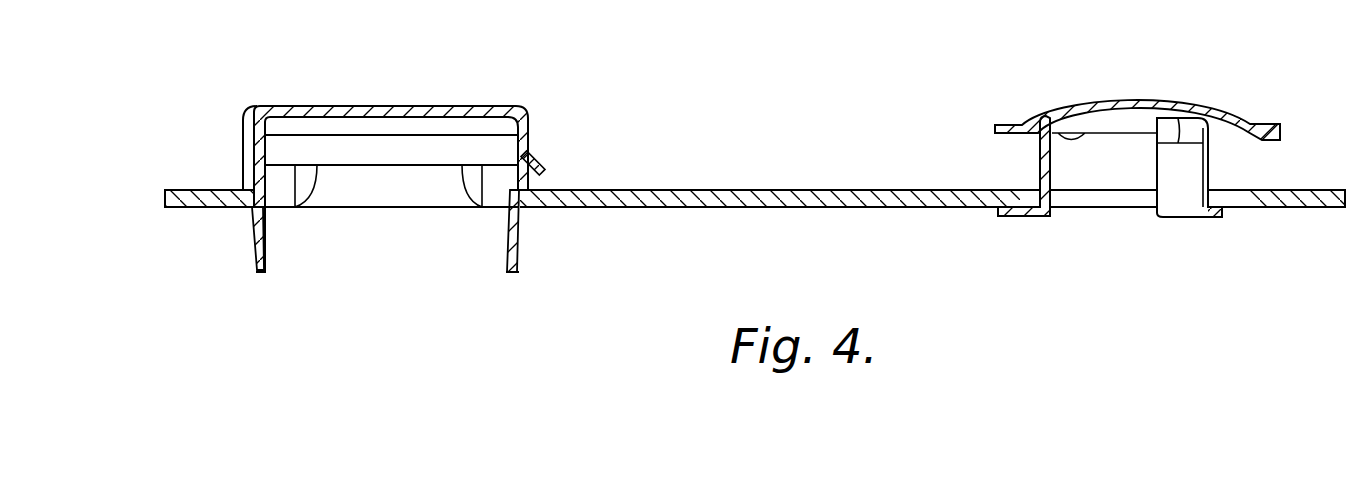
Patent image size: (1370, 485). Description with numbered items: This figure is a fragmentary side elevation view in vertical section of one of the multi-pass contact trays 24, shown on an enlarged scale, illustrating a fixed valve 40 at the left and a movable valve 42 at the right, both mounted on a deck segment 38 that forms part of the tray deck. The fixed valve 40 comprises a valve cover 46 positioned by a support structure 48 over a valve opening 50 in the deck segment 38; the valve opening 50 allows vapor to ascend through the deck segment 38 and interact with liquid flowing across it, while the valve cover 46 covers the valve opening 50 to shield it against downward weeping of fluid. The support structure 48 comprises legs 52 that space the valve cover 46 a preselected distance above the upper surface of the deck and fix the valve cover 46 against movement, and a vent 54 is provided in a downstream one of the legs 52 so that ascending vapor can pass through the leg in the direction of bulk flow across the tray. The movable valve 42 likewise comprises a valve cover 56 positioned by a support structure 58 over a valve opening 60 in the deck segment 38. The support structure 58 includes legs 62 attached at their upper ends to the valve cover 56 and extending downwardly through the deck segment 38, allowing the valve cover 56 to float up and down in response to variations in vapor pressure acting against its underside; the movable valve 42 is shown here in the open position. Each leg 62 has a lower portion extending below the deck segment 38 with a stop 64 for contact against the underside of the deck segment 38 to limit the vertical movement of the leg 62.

The multi-pass contact tray 24 is at (809, 191).
The deck segment 38 is at (690, 190).
The fixed valve 40 is at (483, 104).
The movable valve 42 is at (1141, 172).
The valve cover 46 is at (338, 108).
The support structure 48 is at (521, 244).
The valve opening 50 is at (380, 208).
The legs 52 is at (258, 272).
The vent 54 is at (536, 158).
The valve cover 56 is at (1128, 100).
The support structure 58 is at (1208, 165).
The valve opening 60 is at (1110, 207).
The legs 62 is at (1045, 217).
The stop 64 is at (250, 213).